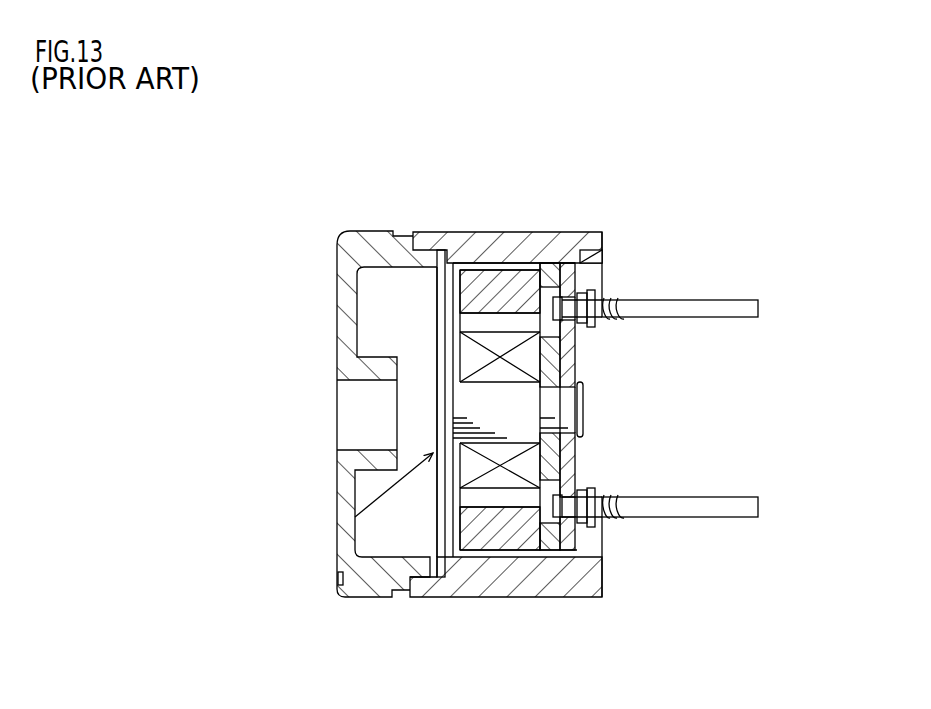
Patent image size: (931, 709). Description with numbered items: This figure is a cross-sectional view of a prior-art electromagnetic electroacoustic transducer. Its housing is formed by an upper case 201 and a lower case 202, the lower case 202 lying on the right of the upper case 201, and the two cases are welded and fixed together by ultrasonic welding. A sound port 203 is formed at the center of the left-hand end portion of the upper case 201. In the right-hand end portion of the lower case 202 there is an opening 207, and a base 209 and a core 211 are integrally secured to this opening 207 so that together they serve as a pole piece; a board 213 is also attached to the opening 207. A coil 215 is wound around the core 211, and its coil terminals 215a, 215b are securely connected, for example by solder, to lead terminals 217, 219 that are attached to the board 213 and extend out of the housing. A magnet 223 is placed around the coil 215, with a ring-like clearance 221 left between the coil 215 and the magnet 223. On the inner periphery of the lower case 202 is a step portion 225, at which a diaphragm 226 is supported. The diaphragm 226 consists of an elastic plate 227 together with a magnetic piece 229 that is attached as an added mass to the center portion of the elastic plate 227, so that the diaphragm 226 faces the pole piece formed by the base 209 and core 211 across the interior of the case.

The upper case 201 is at (383, 232).
The lower case 202 is at (512, 232).
The sound port 203 is at (340, 445).
The opening 207 is at (603, 258).
The base 209 is at (553, 357).
The core 211 is at (547, 413).
The board 213 is at (570, 463).
The coil 215 is at (573, 525).
The coil terminal 215a is at (606, 302).
The coil terminal 215b is at (637, 503).
The lead terminal 217 is at (738, 300).
The lead terminal 219 is at (718, 497).
The ring-like clearance 221 is at (493, 495).
The magnet 223 is at (477, 545).
The step portion 225 is at (438, 250).
The diaphragm 226 is at (340, 560).
The elastic plate 227 is at (437, 305).
The magnetic piece 229 is at (440, 412).